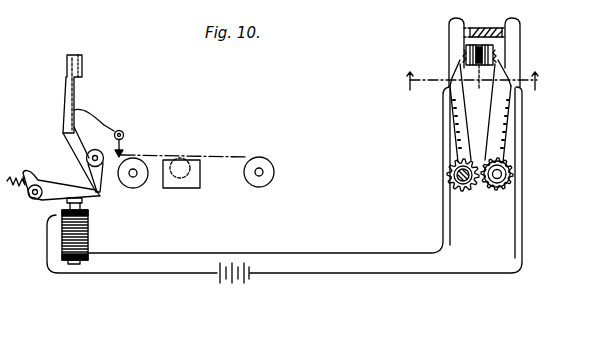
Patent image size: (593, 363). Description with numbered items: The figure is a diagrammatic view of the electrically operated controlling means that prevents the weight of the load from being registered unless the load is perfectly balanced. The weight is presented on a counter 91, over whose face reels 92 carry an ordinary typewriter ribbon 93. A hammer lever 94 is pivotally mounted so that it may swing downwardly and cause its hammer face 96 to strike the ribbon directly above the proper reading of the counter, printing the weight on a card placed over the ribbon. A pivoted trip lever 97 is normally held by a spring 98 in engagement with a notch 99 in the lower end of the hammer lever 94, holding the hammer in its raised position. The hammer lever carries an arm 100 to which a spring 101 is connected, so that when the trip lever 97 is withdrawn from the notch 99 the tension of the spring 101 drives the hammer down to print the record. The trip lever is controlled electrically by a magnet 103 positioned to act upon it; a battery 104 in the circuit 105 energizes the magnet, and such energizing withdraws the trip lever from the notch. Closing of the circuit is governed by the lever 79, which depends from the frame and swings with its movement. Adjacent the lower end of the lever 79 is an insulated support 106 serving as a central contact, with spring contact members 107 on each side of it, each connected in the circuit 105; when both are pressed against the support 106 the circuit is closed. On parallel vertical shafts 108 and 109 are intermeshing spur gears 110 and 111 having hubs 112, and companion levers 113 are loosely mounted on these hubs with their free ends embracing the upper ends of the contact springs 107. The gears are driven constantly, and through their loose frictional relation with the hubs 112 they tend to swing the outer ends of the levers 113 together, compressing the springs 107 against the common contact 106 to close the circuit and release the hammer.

The lever 79 is at (485, 28).
The counter 91 is at (185, 183).
The reels 92 is at (140, 194).
The typewriter ribbon 93 is at (229, 155).
The hammer lever 94 is at (67, 70).
The hammer face 96 is at (83, 64).
The trip lever 97 is at (61, 190).
The spring 98 is at (14, 177).
The notch 99 is at (102, 194).
The arm 100 is at (124, 133).
The spring 101 is at (124, 153).
The magnet 103 is at (88, 243).
The battery 104 is at (250, 278).
The circuit 105 is at (370, 250).
The insulated support 106 is at (472, 72).
The spring contact members 107 is at (466, 50).
The shaft 108 is at (502, 176).
The shaft 109 is at (457, 181).
The spur gear 110 is at (503, 189).
The spur gear 111 is at (469, 189).
The hubs 112 is at (458, 192).
The companion levers 113 is at (448, 45).